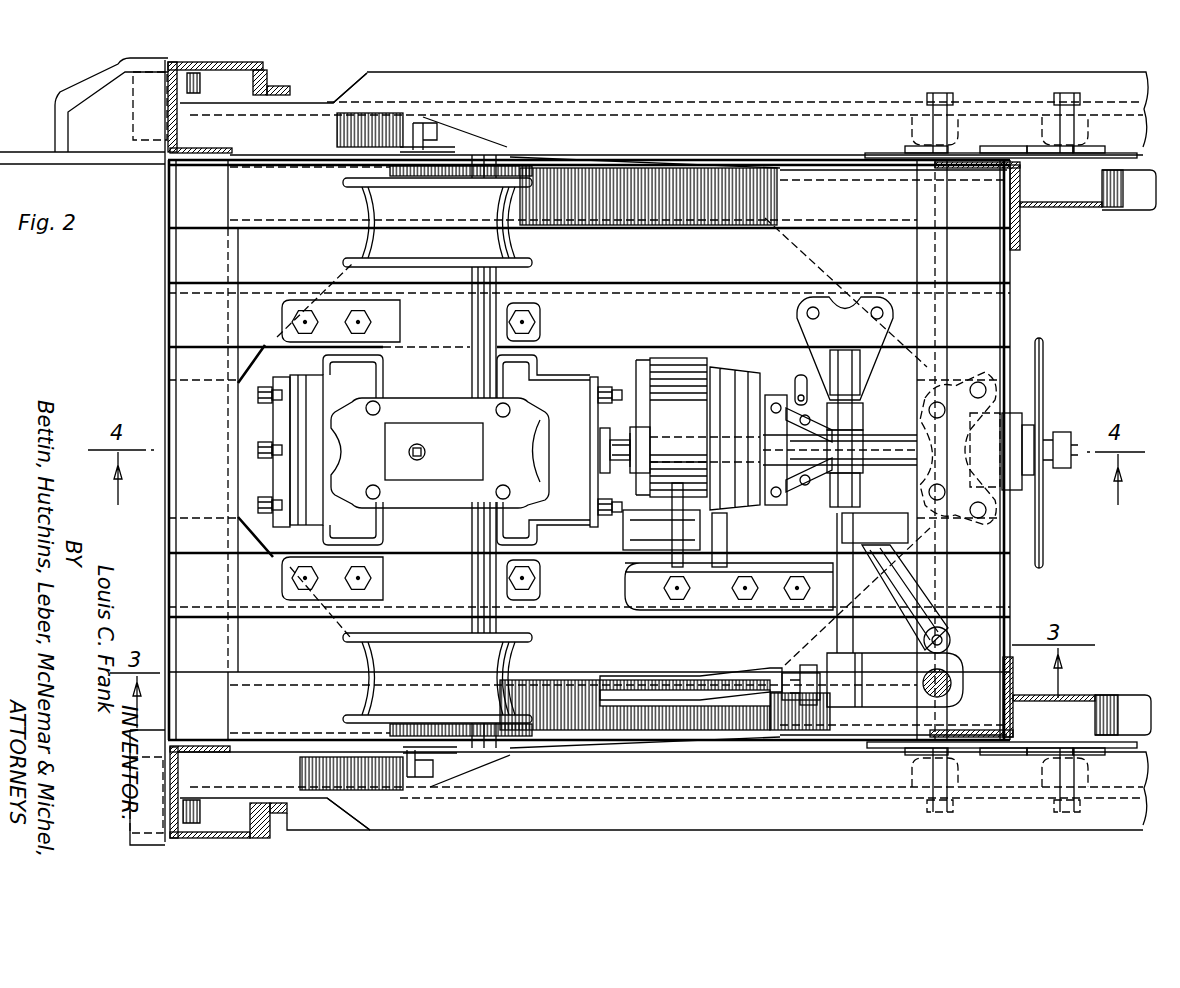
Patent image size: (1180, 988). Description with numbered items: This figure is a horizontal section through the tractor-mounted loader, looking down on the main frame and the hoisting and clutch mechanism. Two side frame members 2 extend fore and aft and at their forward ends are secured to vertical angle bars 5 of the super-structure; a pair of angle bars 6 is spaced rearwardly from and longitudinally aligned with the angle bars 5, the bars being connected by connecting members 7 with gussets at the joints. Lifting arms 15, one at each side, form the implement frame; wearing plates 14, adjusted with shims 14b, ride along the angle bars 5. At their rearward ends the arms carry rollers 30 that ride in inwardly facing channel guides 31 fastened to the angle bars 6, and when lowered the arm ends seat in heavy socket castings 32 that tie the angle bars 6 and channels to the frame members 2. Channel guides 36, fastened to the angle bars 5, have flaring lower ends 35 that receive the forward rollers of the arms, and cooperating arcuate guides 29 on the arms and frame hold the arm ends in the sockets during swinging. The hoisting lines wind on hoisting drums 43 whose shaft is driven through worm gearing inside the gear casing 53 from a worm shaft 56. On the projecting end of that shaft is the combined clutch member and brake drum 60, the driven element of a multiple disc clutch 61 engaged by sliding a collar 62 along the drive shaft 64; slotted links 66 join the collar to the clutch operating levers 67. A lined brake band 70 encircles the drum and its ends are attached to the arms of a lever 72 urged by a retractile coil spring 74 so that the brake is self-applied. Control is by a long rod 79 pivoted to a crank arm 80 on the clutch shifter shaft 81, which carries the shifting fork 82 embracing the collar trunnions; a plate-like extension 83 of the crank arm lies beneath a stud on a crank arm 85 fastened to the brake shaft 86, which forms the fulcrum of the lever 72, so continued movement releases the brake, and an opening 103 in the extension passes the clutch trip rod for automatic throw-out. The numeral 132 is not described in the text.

The side frame members 2 is at (40, 158).
The vertical angle bars 5 is at (1020, 233).
The angle bars 6 is at (188, 150).
The connecting members 7 is at (657, 205).
The wearing plates 14 is at (1120, 156).
The shims 14b is at (962, 149).
The lifting arms 15 is at (662, 451).
The arcuate guides 29 is at (383, 773).
The rollers 30 is at (200, 82).
The channel guides 31 is at (290, 92).
The sockets 32 is at (100, 108).
The flaring lower ends 35 is at (1140, 192).
The channel guides 36 is at (1070, 207).
The hoisting drums 43 is at (437, 451).
The gear casing 53 is at (440, 463).
The worm shaft 56 is at (622, 440).
The combined driven clutch member and brake drum 60 is at (637, 373).
The multiple disc clutch 61 is at (717, 363).
The collar 62 is at (816, 428).
The drive shaft 64 is at (840, 450).
The links 66 is at (812, 390).
The operating levers 67 is at (775, 397).
The brake band 70 is at (695, 427).
The lever 72 is at (670, 500).
The retractile coil spring 74 is at (666, 584).
The rod 79 is at (683, 700).
The crank arm 80 is at (823, 690).
The clutch shifter shaft 81 is at (840, 637).
The clutch shifting fork 82 is at (873, 412).
The plate-like extension 83 is at (982, 636).
The crank arm 85 is at (880, 573).
The brake shaft 86 is at (770, 530).
The opening 103 is at (895, 680).
The frame box 132 is at (586, 217).